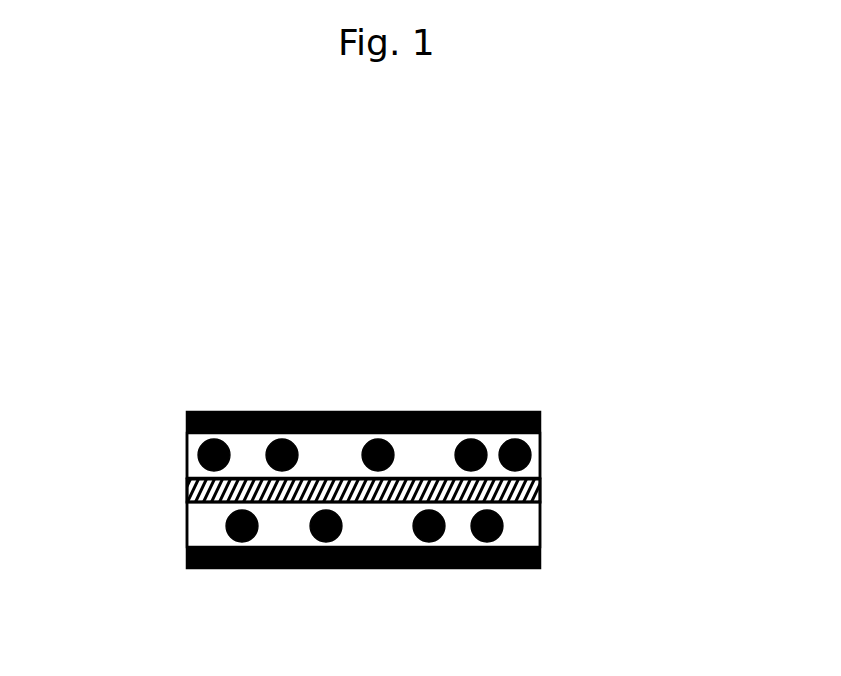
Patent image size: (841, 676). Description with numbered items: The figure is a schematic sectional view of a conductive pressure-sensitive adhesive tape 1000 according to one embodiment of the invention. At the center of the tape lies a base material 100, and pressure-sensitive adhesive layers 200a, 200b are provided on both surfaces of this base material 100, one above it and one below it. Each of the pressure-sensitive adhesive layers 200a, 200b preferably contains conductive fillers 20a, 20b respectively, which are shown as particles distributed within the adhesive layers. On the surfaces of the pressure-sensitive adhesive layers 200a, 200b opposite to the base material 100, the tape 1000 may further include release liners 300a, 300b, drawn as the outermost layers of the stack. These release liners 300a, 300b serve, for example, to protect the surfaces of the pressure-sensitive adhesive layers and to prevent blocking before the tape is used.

The conductive pressure-sensitive adhesive tape 1000 is at (390, 382).
The base material 100 is at (540, 492).
The pressure-sensitive adhesive layer 200a is at (540, 460).
The pressure-sensitive adhesive layer 200b is at (540, 522).
The release liner 300a is at (540, 422).
The release liner 300b is at (540, 560).
The conductive fillers 20a is at (200, 453).
The conductive fillers 20b is at (228, 531).